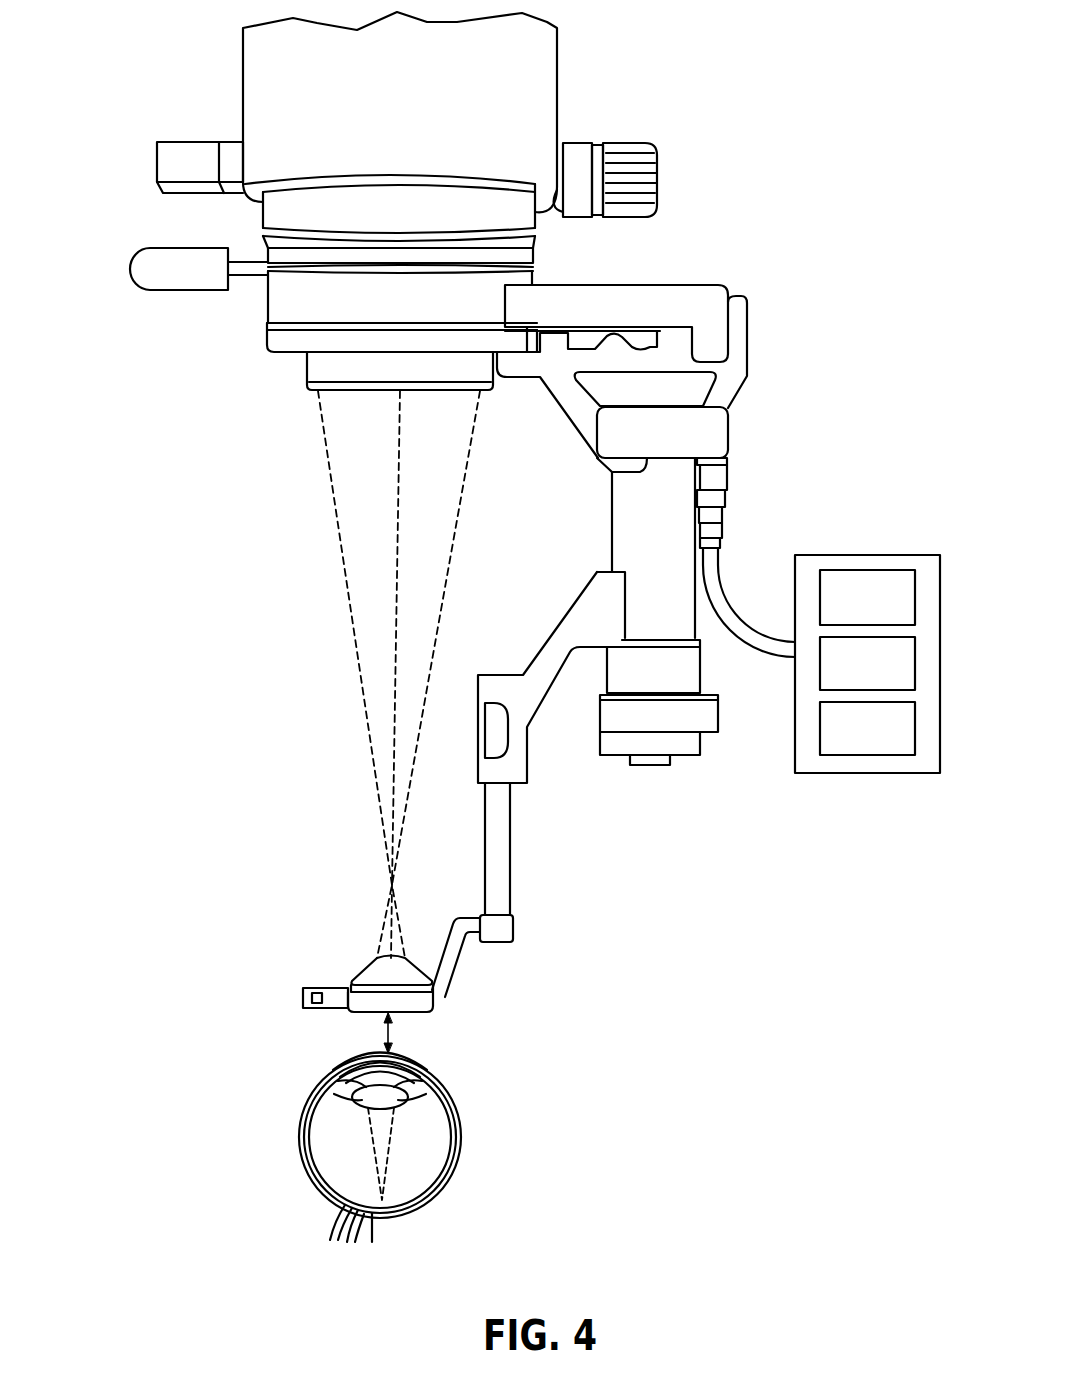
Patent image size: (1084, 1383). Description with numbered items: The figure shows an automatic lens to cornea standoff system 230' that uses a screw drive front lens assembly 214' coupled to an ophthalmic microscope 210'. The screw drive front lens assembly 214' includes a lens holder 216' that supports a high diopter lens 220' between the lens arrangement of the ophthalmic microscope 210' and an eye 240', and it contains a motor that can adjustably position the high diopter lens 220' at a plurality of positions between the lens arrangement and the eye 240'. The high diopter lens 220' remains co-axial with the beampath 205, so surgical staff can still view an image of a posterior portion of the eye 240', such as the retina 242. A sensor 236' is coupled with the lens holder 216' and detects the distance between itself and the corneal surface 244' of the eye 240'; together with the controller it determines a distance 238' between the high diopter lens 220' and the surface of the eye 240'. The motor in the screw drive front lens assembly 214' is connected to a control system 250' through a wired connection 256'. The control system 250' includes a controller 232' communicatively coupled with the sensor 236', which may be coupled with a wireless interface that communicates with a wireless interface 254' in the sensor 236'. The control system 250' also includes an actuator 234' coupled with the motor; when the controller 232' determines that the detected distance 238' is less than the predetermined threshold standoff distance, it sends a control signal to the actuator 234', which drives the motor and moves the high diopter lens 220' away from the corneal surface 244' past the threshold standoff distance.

The automatic lens to cornea standoff system 230' is at (308, 99).
The ophthalmic microscope 210' is at (427, 223).
The screw drive front lens assembly 214' is at (698, 613).
The beampath 205 is at (302, 568).
The lens holder 216' is at (495, 958).
The high diopter lens 220' is at (342, 956).
The sensor 236' is at (263, 1004).
The wireless interface 254' is at (576, 852).
The distance 238' is at (456, 1040).
The corneal surface 244' is at (332, 1053).
The eye 240' is at (424, 1149).
The retina 242 is at (413, 1207).
The wired connection 256' is at (786, 585).
The control system 250' is at (832, 689).
The controller 232' is at (867, 597).
The actuator 234' is at (867, 663).